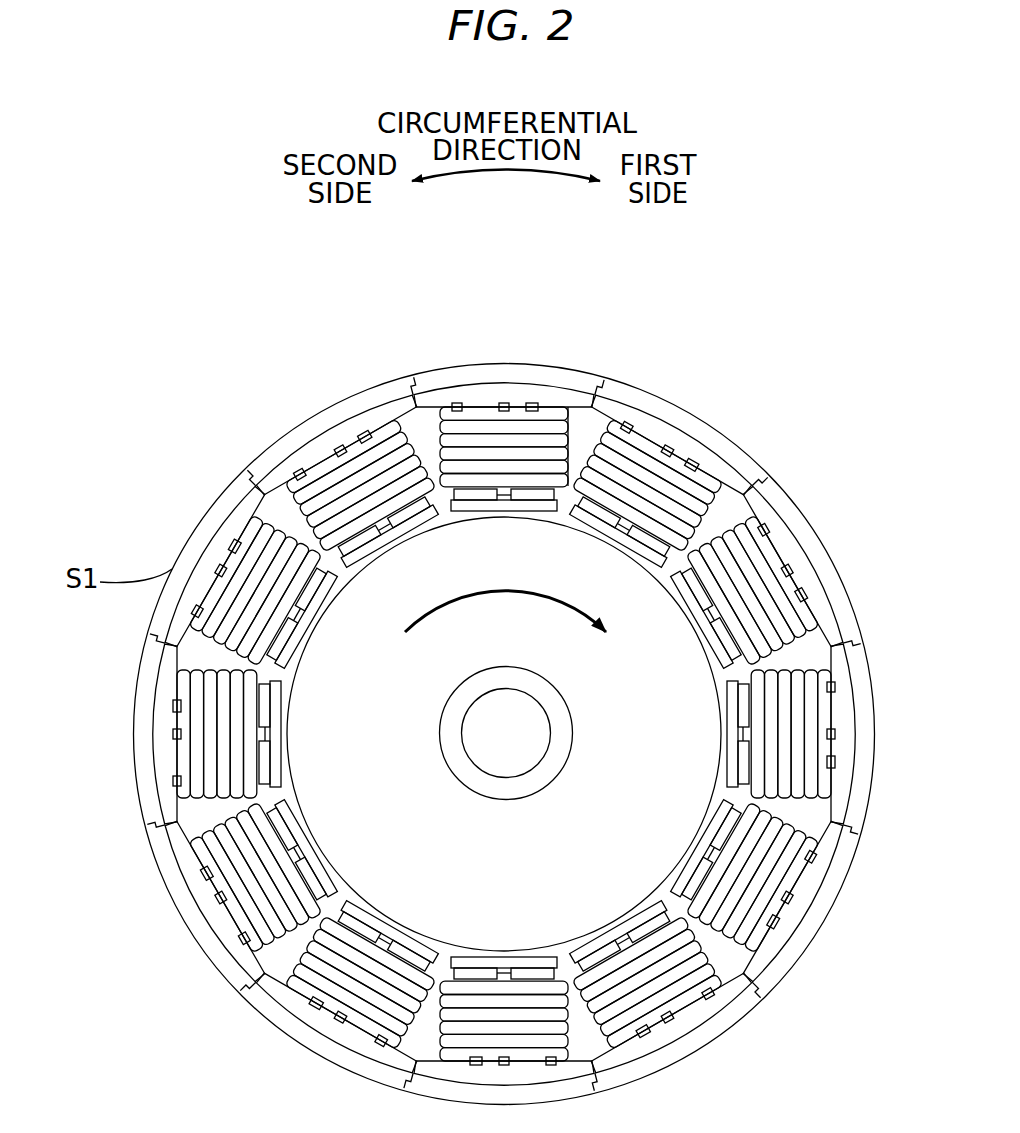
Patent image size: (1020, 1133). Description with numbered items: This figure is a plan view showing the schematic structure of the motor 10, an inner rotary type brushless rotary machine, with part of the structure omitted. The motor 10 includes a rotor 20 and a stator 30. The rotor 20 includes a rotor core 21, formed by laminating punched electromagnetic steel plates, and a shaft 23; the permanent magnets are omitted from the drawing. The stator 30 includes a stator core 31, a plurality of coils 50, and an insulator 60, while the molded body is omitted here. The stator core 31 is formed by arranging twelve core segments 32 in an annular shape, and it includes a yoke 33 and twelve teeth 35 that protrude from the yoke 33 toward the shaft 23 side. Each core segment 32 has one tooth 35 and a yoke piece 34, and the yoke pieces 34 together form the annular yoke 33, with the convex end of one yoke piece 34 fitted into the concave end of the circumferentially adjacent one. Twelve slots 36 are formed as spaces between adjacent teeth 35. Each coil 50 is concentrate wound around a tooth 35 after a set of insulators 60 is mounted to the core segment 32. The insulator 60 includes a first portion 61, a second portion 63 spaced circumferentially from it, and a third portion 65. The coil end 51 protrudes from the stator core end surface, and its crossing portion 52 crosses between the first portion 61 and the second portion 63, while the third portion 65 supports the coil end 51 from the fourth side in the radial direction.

The motor 10 is at (723, 278).
The rotor 20 is at (698, 622).
The rotor core 21 is at (670, 568).
The shaft 23 is at (552, 734).
The stator 30 is at (735, 380).
The stator core 31 is at (282, 383).
The core segment 32 is at (293, 295).
The yoke 33 is at (253, 435).
The yoke piece 34 is at (421, 369).
The tooth 35 is at (500, 507).
The slot 36 is at (580, 428).
The coil 50 is at (583, 470).
The coil end 51 is at (575, 448).
The crossing portion 52 is at (505, 452).
The insulator 60 is at (570, 380).
The first portion 61 is at (535, 493).
The second portion 63 is at (452, 485).
The third portion 65 is at (493, 396).